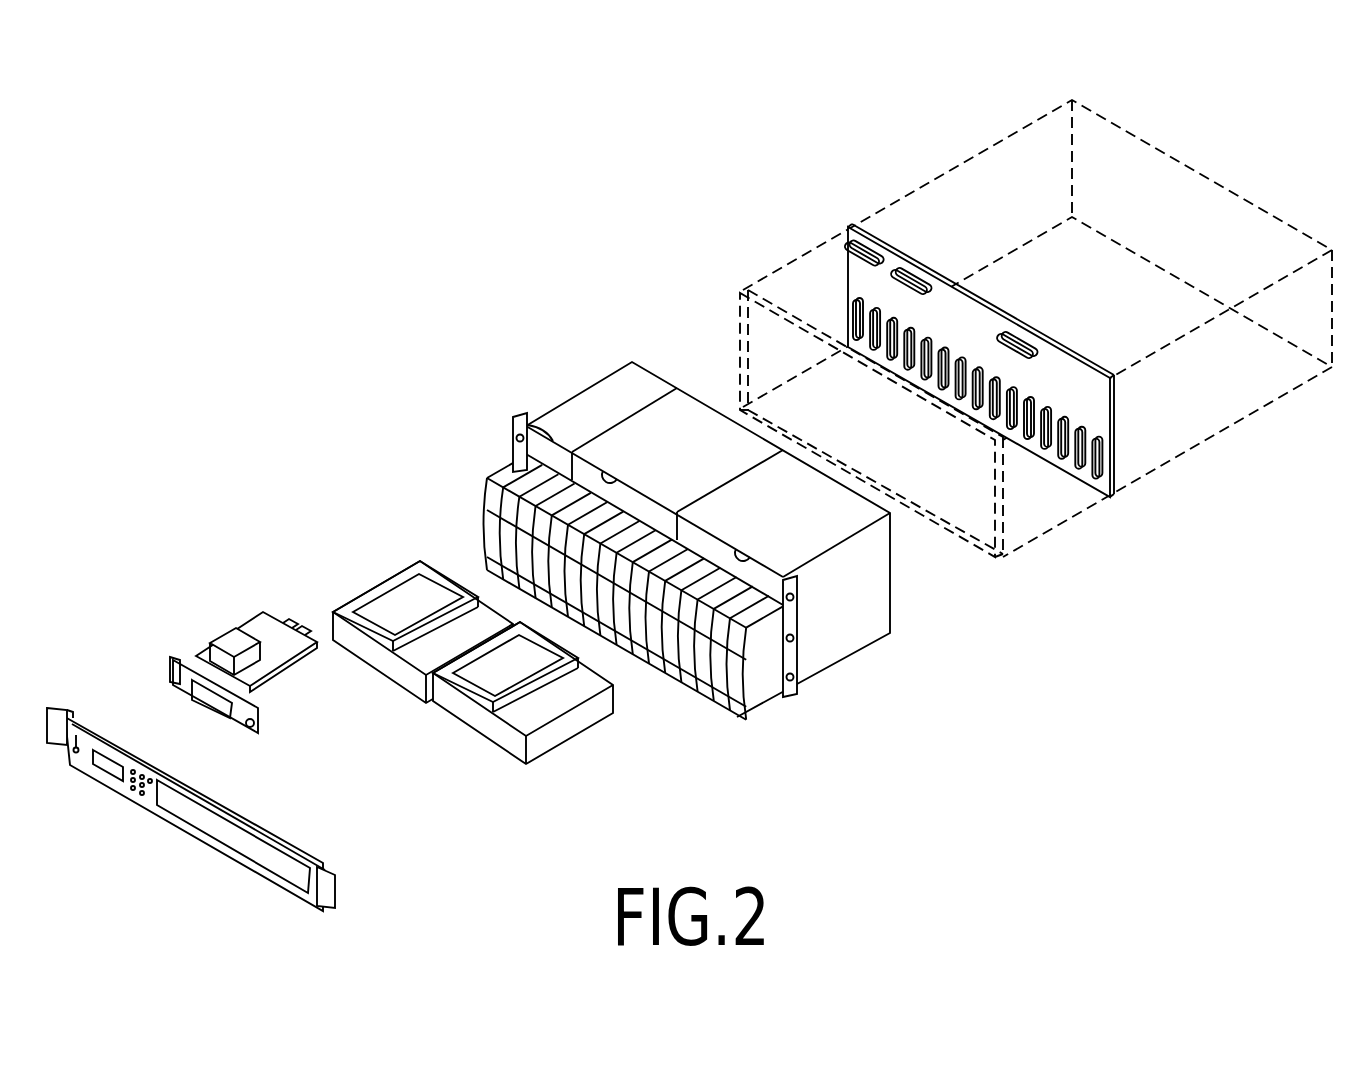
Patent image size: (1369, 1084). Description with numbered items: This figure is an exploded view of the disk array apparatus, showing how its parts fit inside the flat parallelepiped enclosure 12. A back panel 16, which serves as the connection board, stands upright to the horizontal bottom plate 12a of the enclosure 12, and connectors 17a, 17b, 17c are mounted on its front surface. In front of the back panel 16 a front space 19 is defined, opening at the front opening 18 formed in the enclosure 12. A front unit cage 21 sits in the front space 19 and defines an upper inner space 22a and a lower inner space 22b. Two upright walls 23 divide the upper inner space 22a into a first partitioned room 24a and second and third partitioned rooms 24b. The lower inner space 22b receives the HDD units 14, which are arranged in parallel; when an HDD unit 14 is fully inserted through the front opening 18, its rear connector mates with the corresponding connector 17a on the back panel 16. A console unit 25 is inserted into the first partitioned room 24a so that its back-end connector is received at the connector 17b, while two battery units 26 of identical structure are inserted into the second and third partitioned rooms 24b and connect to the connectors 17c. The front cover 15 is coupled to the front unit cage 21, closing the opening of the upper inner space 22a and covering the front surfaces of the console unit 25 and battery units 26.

The enclosure 12 is at (948, 174).
The bottom plate 12a is at (1247, 418).
The HDD units 14 is at (490, 548).
The front cover 15 is at (337, 893).
The back panel 16 is at (1128, 430).
The connectors 17a is at (853, 316).
The connector 17b is at (862, 242).
The connectors 17c is at (910, 273).
The front opening 18 is at (742, 350).
The front space 19 is at (816, 256).
The front unit cage 21 is at (843, 663).
The upper inner space 22a is at (798, 618).
The lower inner space 22b is at (786, 698).
The upright walls 23 is at (522, 452).
The first partitioned room 24a is at (530, 426).
The second and third partitioned rooms 24b is at (612, 481).
The console unit 25 is at (260, 727).
The battery units 26 is at (368, 592).